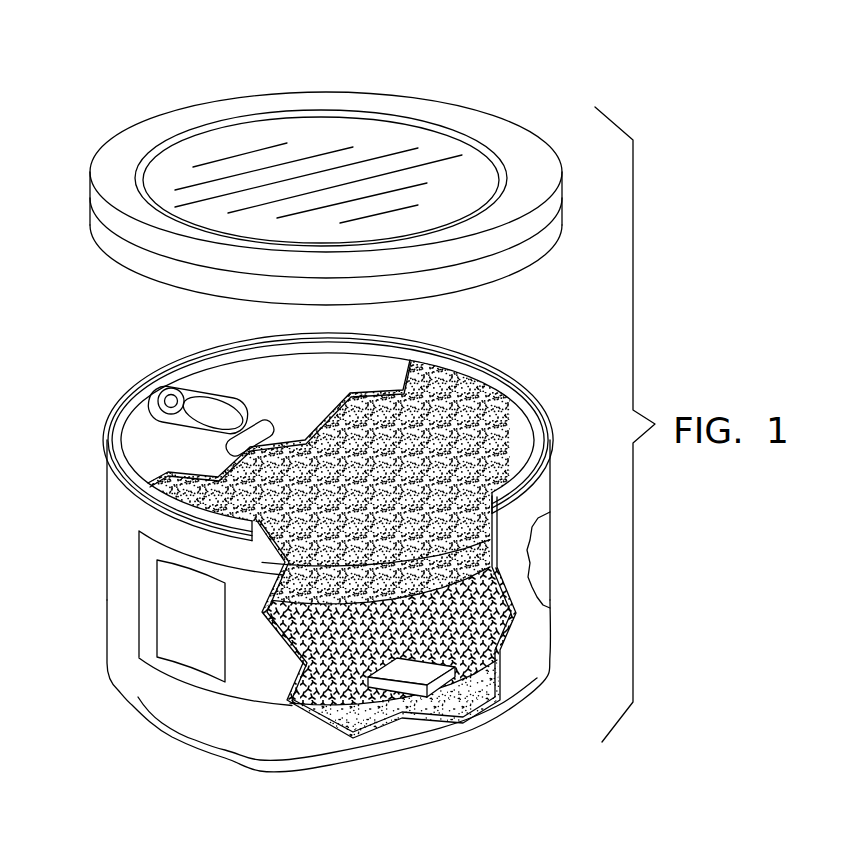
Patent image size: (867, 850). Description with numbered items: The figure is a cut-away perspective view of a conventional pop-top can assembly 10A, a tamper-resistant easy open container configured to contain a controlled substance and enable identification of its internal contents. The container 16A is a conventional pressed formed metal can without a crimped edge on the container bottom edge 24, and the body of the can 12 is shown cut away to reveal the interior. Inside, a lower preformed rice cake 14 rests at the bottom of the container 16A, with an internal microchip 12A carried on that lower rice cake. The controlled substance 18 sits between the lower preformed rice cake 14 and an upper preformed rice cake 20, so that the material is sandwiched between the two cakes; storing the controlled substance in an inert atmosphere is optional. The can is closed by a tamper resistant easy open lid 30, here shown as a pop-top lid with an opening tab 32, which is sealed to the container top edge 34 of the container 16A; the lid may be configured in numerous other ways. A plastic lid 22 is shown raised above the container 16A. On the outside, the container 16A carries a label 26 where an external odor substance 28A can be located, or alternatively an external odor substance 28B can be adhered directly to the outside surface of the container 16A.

The pop-top can assembly 10A is at (440, 72).
The plastic lid 22 is at (498, 142).
The container top edge 34 is at (478, 355).
The upper preformed rice cake 20 is at (494, 443).
The opening tab 32 is at (223, 393).
The tamper resistant easy open lid 30 is at (233, 407).
The external odor substance 28B is at (548, 553).
The external odor substance 28A is at (172, 597).
The label 26 is at (323, 583).
The container 16A is at (527, 648).
The container bottom edge 24 is at (170, 732).
The controlled substance 18 is at (325, 695).
The lower preformed rice cake 14 is at (420, 678).
The container 12 is at (359, 629).
The internal microchip 12A is at (349, 748).